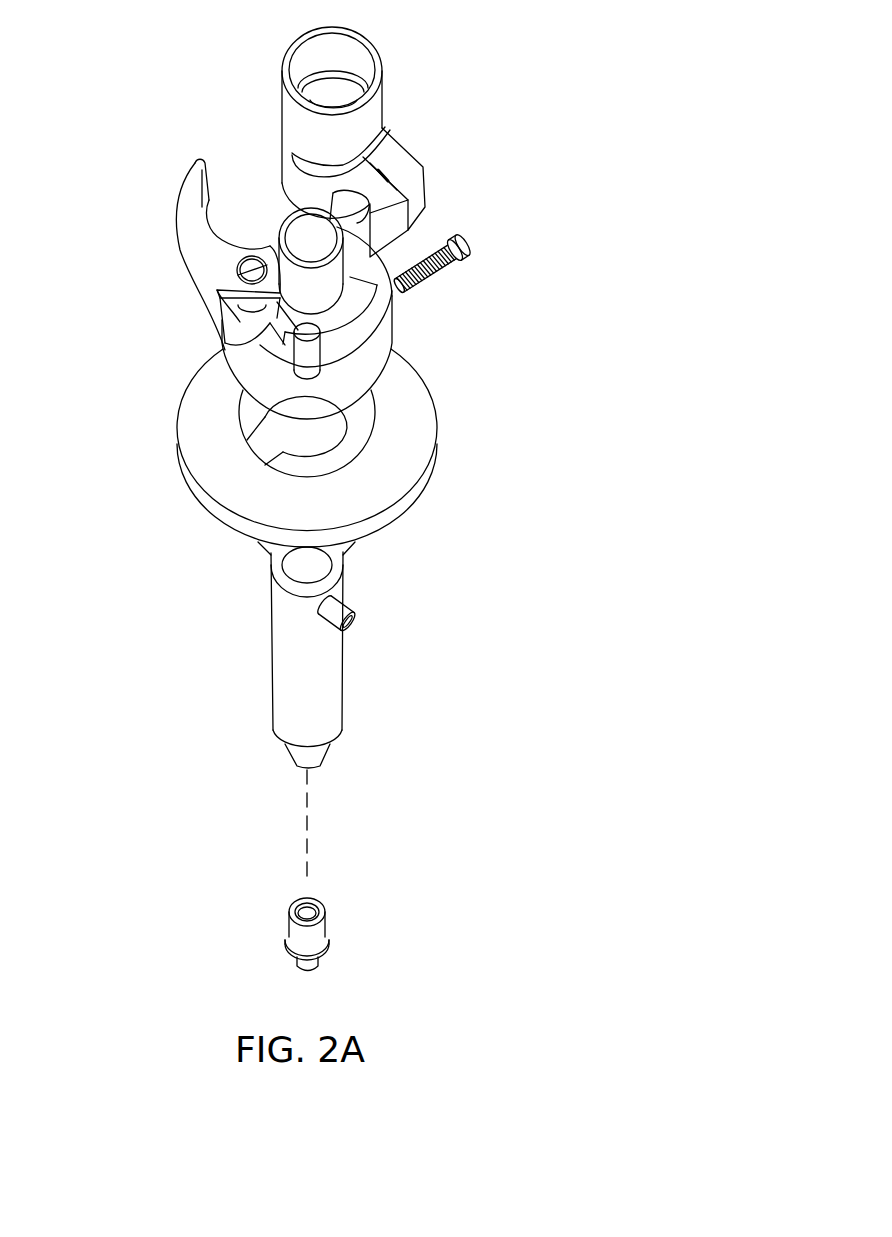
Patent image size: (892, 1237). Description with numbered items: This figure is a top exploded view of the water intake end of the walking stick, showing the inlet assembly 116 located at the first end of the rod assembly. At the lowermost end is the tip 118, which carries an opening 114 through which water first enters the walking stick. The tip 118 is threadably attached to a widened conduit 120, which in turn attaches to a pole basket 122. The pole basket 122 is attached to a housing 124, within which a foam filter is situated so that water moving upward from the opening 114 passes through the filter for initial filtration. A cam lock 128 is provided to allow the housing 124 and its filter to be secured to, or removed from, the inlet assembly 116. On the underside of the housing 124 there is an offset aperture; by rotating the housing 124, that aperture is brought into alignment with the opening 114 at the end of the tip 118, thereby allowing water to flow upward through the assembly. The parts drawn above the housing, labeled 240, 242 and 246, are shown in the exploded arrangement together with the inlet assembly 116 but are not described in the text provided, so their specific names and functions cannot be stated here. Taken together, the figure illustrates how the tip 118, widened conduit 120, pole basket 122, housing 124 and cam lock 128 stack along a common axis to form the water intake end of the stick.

The inlet assembly 116 is at (542, 72).
The mounting tube 240 is at (372, 112).
The screw 242 is at (463, 245).
The post 246 is at (274, 221).
The cam lock 128 is at (192, 287).
The housing 124 is at (378, 358).
The pole basket 122 is at (412, 442).
The widened conduit 120 is at (335, 675).
The tip 118 is at (318, 933).
The opening 114 is at (318, 967).